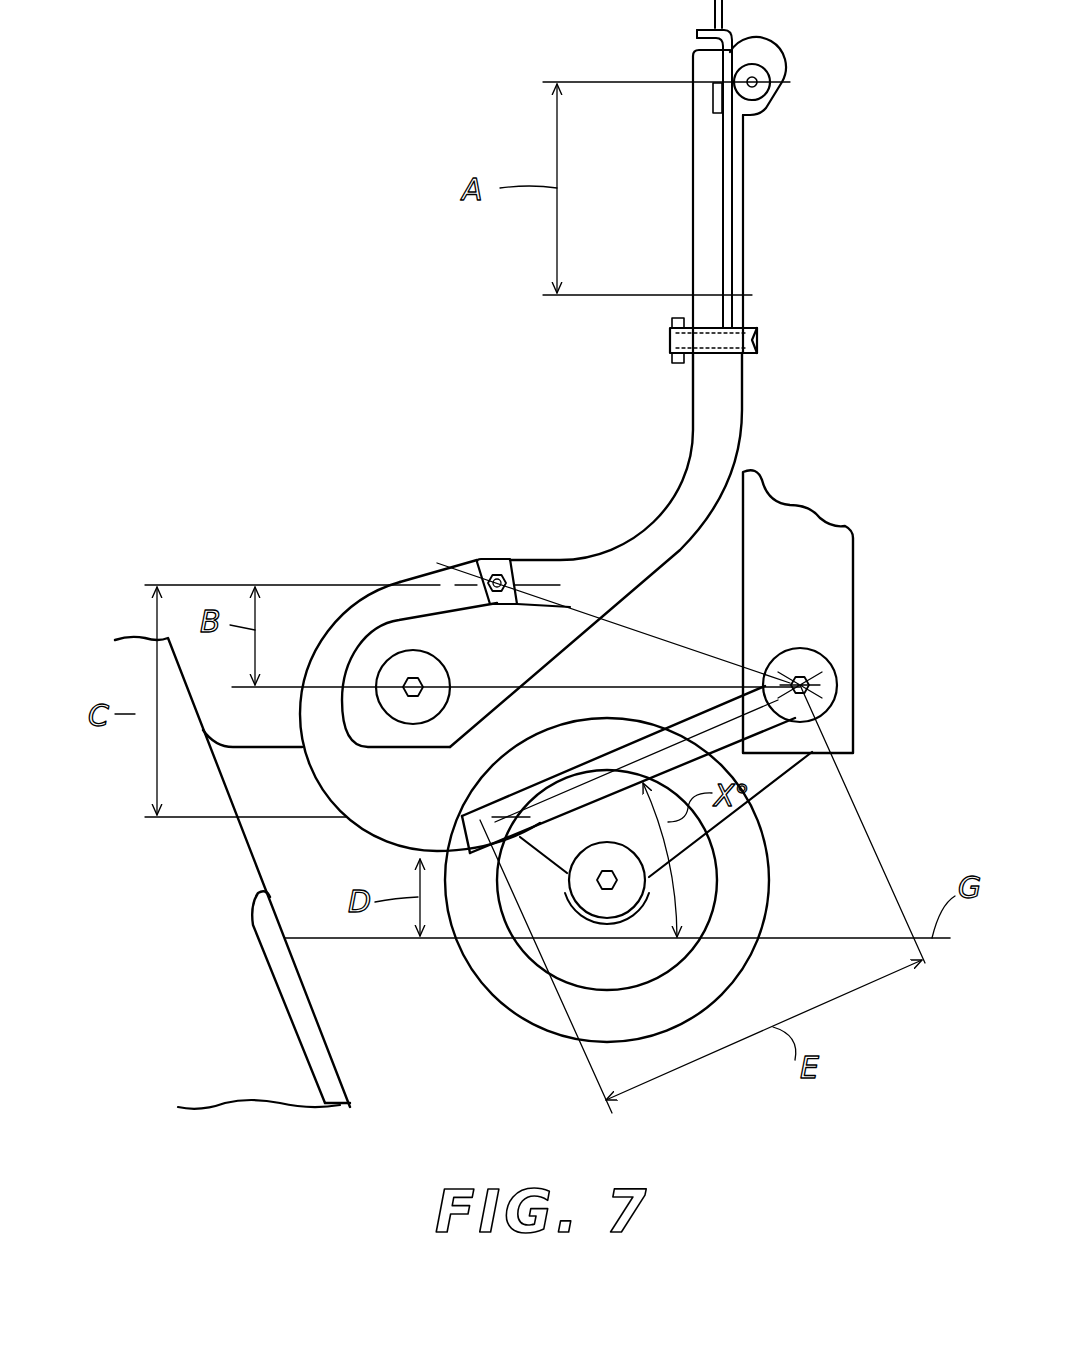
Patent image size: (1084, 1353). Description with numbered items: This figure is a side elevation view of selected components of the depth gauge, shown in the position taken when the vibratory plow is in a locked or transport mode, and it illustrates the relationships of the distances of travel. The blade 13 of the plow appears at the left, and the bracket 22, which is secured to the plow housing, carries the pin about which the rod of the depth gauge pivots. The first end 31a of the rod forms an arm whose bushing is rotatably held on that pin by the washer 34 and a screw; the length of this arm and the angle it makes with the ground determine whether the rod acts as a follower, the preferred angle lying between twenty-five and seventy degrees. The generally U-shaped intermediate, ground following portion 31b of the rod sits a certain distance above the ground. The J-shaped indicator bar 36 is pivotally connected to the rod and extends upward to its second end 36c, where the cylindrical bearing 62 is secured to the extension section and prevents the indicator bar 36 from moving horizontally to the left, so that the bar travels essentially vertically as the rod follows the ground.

The blade 13 is at (310, 1041).
The bracket 22 is at (825, 590).
The first end of the rod 31a is at (606, 756).
The intermediate, ground following portion 31b is at (358, 834).
The washer 34 is at (830, 694).
The indicator bar 36 is at (668, 485).
The second end of the indicator bar 36c is at (710, 154).
The cylindrical bearing 62 is at (752, 64).